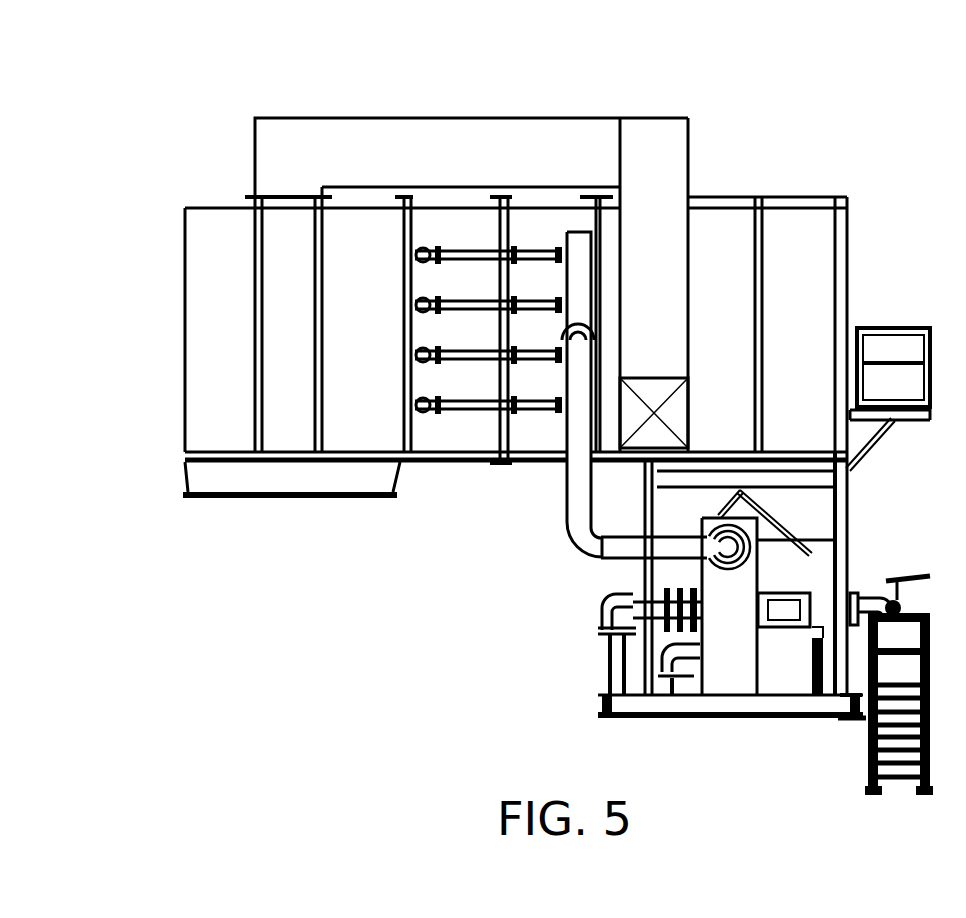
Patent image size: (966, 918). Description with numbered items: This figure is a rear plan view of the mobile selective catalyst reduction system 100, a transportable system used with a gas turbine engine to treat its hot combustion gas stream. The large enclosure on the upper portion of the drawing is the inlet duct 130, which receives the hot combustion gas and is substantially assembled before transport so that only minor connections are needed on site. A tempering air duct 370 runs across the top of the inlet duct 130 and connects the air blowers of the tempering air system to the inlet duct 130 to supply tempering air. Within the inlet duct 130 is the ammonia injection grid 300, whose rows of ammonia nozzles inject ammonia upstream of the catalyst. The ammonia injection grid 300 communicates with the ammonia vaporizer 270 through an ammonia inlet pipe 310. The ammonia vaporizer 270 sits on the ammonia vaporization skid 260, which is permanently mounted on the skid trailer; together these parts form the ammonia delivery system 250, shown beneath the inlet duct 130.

The mobile selective catalyst reduction system 100 is at (178, 58).
The inlet duct 130 is at (822, 192).
The tempering air duct 370 is at (307, 118).
The ammonia injection grid 300 is at (470, 412).
The ammonia inlet pipe 310 is at (567, 512).
The ammonia delivery system 250 is at (856, 534).
The ammonia vaporizer 270 is at (710, 677).
The ammonia vaporization skid 260 is at (823, 720).